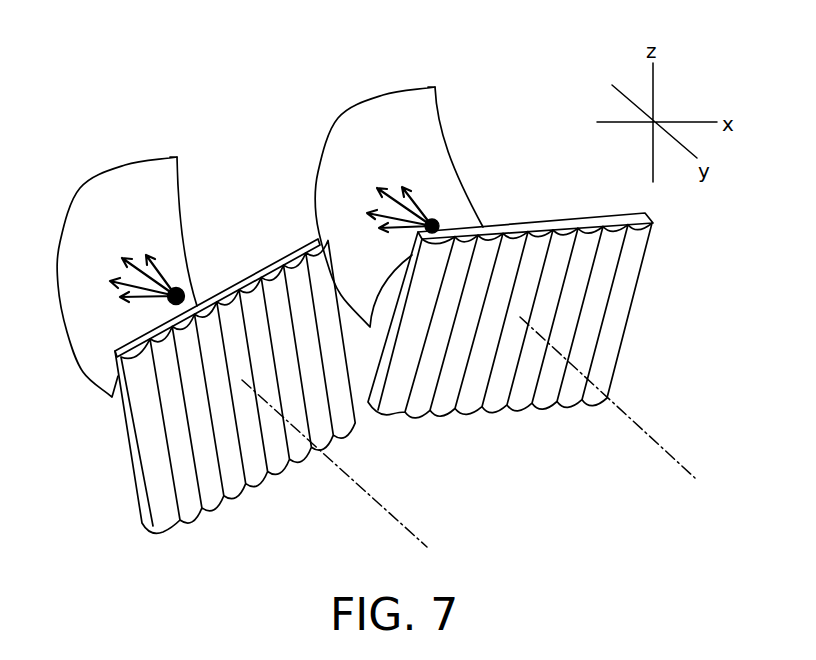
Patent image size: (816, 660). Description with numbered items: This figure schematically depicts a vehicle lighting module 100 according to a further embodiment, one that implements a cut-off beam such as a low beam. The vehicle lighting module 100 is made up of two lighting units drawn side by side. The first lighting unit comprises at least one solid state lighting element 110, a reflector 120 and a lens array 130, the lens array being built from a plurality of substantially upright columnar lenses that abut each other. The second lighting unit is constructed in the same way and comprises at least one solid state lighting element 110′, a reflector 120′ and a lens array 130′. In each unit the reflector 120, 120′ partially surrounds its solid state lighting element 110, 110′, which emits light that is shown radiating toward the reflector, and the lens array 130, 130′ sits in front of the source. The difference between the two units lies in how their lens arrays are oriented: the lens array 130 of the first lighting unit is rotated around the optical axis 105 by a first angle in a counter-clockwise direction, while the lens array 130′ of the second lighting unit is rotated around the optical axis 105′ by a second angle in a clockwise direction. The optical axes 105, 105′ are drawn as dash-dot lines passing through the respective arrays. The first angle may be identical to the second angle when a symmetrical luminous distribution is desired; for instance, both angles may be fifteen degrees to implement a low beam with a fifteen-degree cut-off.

The vehicle lighting module 100 is at (112, 86).
The optical axis 105 is at (379, 499).
The solid state lighting element 110 is at (178, 292).
The reflector 120 is at (168, 178).
The lens array 130 is at (137, 462).
The optical axis 105′ is at (655, 437).
The solid state lighting element 110′ is at (436, 222).
The reflector 120′ is at (425, 108).
The lens array 130′ is at (630, 325).